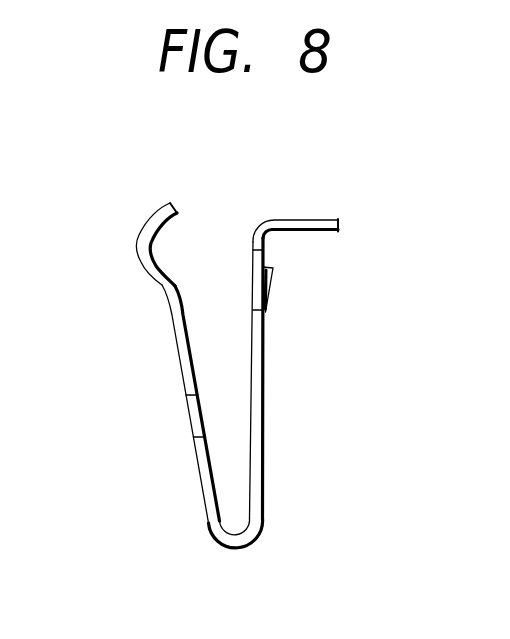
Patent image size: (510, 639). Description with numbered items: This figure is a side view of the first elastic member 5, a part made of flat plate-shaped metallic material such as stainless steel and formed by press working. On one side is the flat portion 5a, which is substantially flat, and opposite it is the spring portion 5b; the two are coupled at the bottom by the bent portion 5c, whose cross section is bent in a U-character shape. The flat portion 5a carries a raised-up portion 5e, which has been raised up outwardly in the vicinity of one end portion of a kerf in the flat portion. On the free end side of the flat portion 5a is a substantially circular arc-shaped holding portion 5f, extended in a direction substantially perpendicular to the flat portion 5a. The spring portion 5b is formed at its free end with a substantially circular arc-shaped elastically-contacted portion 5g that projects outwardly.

The first elastic member 5 is at (330, 188).
The flat portion 5a is at (266, 387).
The spring portion 5b is at (180, 349).
The bent portion 5c is at (258, 537).
The raised-up portion 5e is at (274, 279).
The holding portion 5f is at (284, 223).
The elastically-contacted portion 5g is at (147, 217).